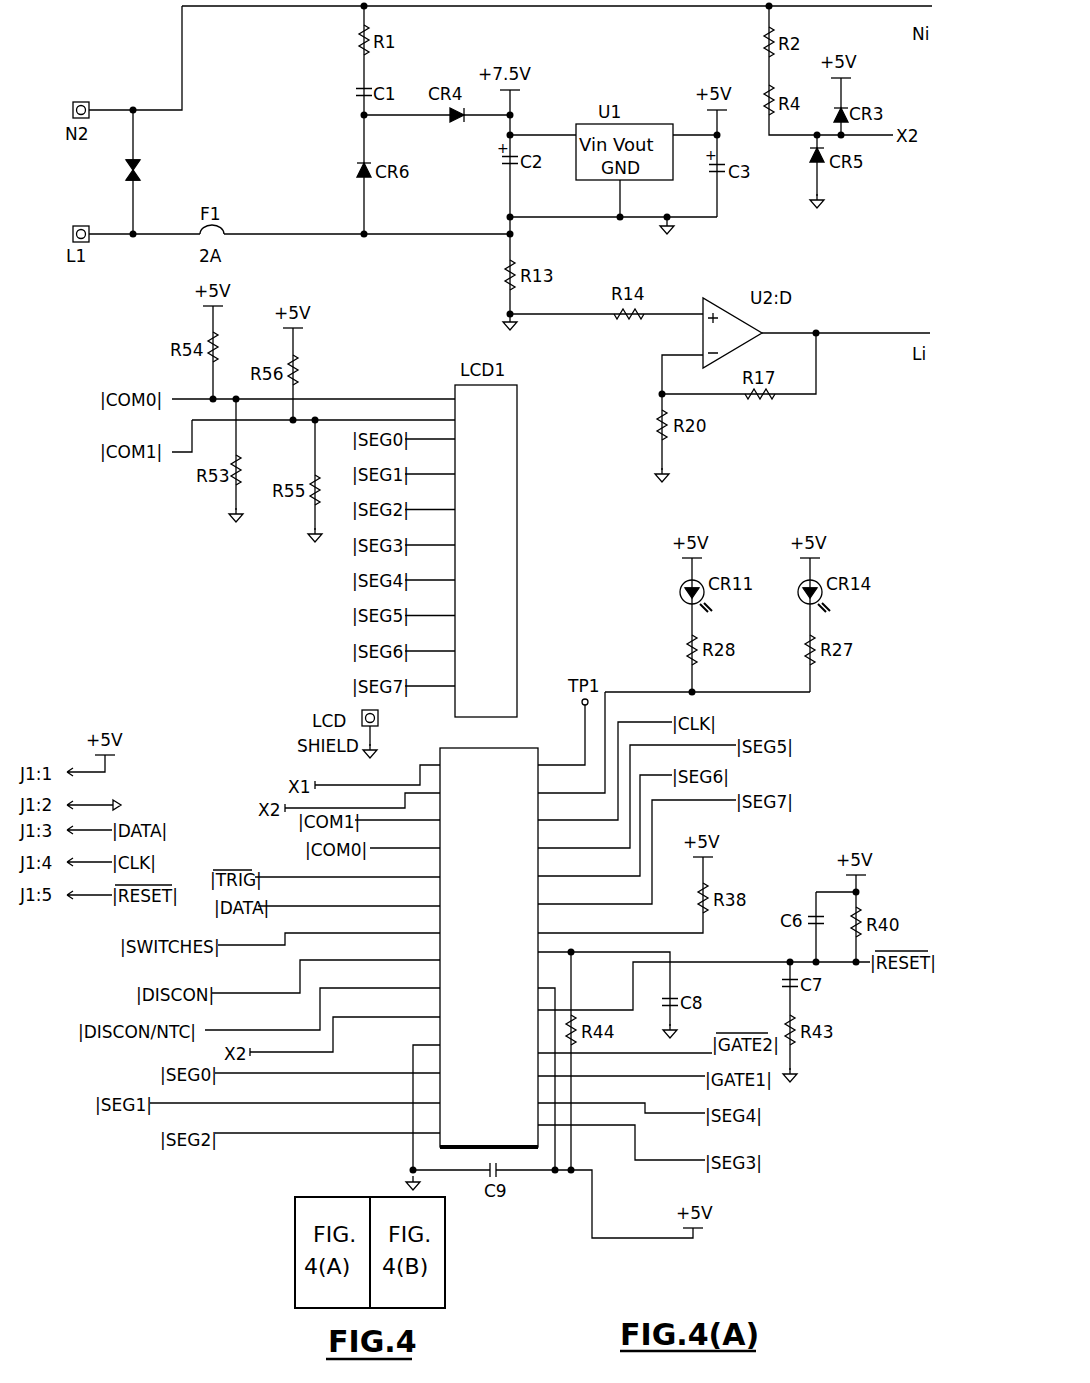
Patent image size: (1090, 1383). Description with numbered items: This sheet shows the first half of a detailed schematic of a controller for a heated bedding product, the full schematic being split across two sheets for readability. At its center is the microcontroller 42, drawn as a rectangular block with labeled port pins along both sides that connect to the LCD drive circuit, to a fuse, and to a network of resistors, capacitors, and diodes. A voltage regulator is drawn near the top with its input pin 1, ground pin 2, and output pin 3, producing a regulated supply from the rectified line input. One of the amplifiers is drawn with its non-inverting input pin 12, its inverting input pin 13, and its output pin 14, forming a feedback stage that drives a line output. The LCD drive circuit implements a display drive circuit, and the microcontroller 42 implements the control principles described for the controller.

The microcontroller 42 is at (538, 748).
The regulator input pin 1 is at (543, 124).
The regulator ground pin 2 is at (613, 198).
The regulator output pin 3 is at (695, 123).
The op amp non-inverting input 12 is at (671, 299).
The op amp inverting input 13 is at (682, 365).
The op amp output 14 is at (846, 324).